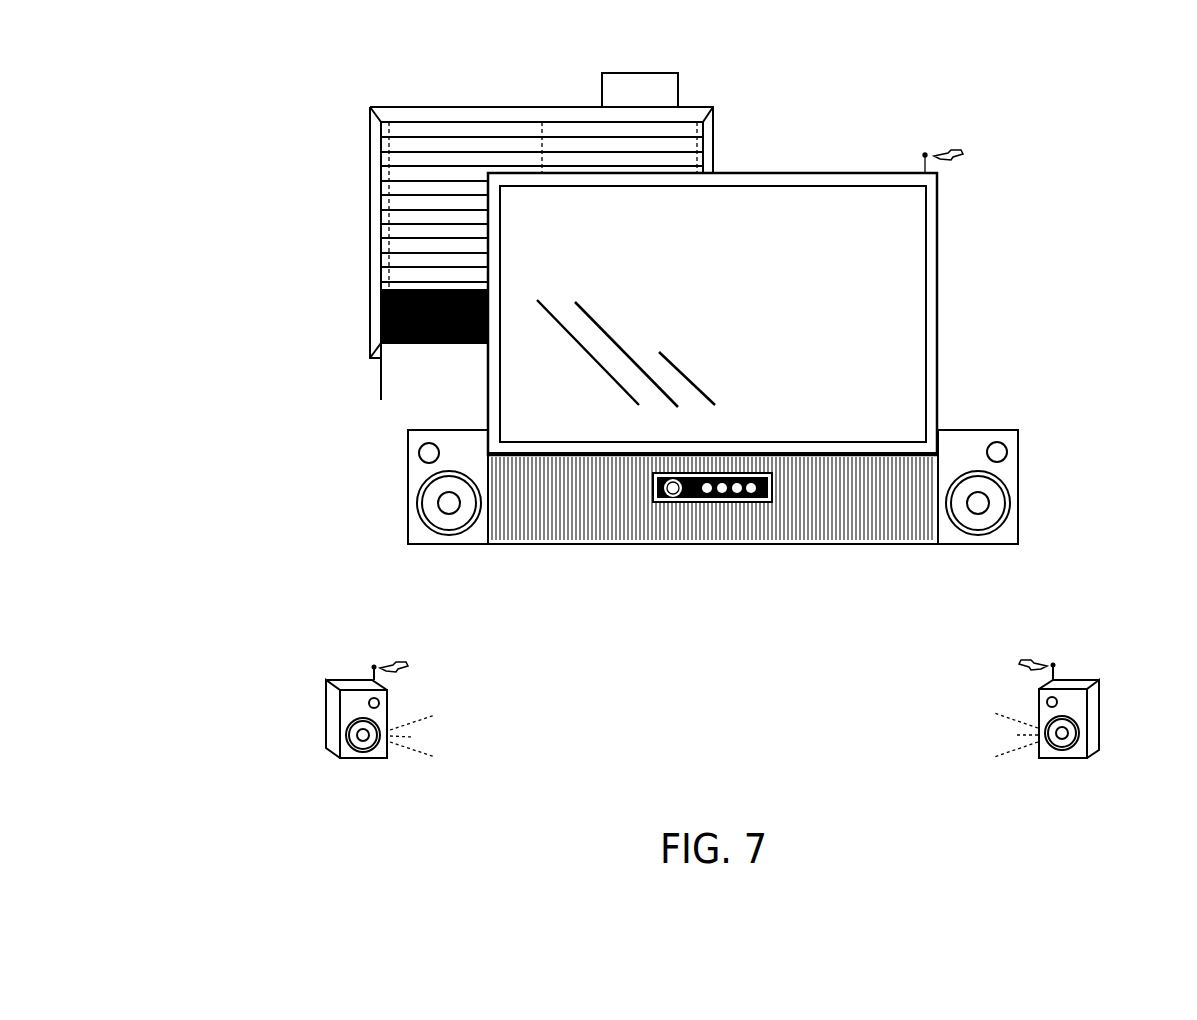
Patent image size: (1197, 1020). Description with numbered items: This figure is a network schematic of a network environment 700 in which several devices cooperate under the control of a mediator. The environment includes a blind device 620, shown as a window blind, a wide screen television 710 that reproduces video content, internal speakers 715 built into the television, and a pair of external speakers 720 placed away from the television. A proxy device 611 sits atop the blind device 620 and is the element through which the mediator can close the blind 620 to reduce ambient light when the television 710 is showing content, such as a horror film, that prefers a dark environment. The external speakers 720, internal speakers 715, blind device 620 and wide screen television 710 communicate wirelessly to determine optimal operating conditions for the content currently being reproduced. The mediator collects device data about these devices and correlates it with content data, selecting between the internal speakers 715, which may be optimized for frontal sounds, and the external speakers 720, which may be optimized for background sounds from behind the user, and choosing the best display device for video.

The network environment 700 is at (262, 144).
The proxy device 611 is at (690, 79).
The blind device 620 is at (360, 282).
The wide screen television 710 is at (950, 323).
The internal speakers 715 is at (396, 488).
The external speakers 720 is at (314, 706).